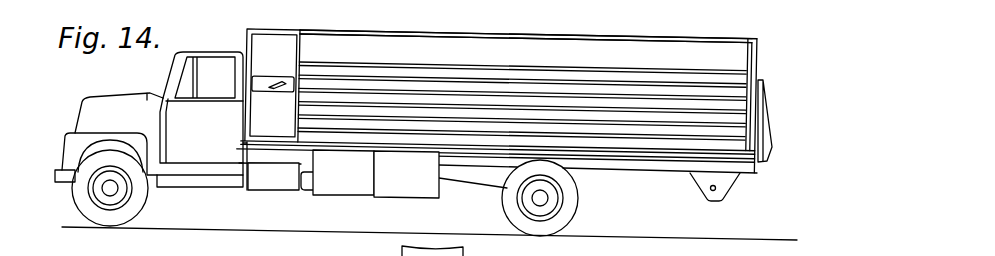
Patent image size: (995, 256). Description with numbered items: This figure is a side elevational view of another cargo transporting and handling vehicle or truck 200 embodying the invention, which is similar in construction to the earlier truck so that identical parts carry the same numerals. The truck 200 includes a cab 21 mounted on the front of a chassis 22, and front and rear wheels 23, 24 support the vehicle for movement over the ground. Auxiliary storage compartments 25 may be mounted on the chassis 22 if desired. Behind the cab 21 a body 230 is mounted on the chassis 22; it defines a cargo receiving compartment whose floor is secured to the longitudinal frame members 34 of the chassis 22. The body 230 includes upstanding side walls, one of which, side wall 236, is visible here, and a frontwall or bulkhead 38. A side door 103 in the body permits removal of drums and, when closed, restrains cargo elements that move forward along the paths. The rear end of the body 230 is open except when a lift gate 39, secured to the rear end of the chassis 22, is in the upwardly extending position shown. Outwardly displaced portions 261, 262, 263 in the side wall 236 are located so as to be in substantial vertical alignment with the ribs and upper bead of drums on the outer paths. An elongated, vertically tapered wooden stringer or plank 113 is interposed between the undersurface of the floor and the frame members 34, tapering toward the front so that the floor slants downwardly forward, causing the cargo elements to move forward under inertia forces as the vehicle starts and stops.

The cargo transporting and handling vehicle or truck 200 is at (134, 125).
The cab 21 is at (205, 52).
The frontwall or bulkhead 38 is at (247, 40).
The side door 103 is at (284, 70).
The body 230 is at (622, 32).
The side wall 236 is at (505, 62).
The outwardly displaced portion 263 is at (580, 75).
The outwardly displaced portion 262 is at (577, 100).
The outwardly displaced portion 261 is at (580, 128).
The lift gate 39 is at (763, 80).
The longitudinal frame member 34 is at (597, 167).
The chassis 22 is at (623, 175).
The vertically tapered stringer or plank 113 is at (667, 155).
The rear wheel 24 is at (518, 223).
The auxiliary storage compartment 25 is at (338, 189).
The front wheel 23 is at (135, 205).